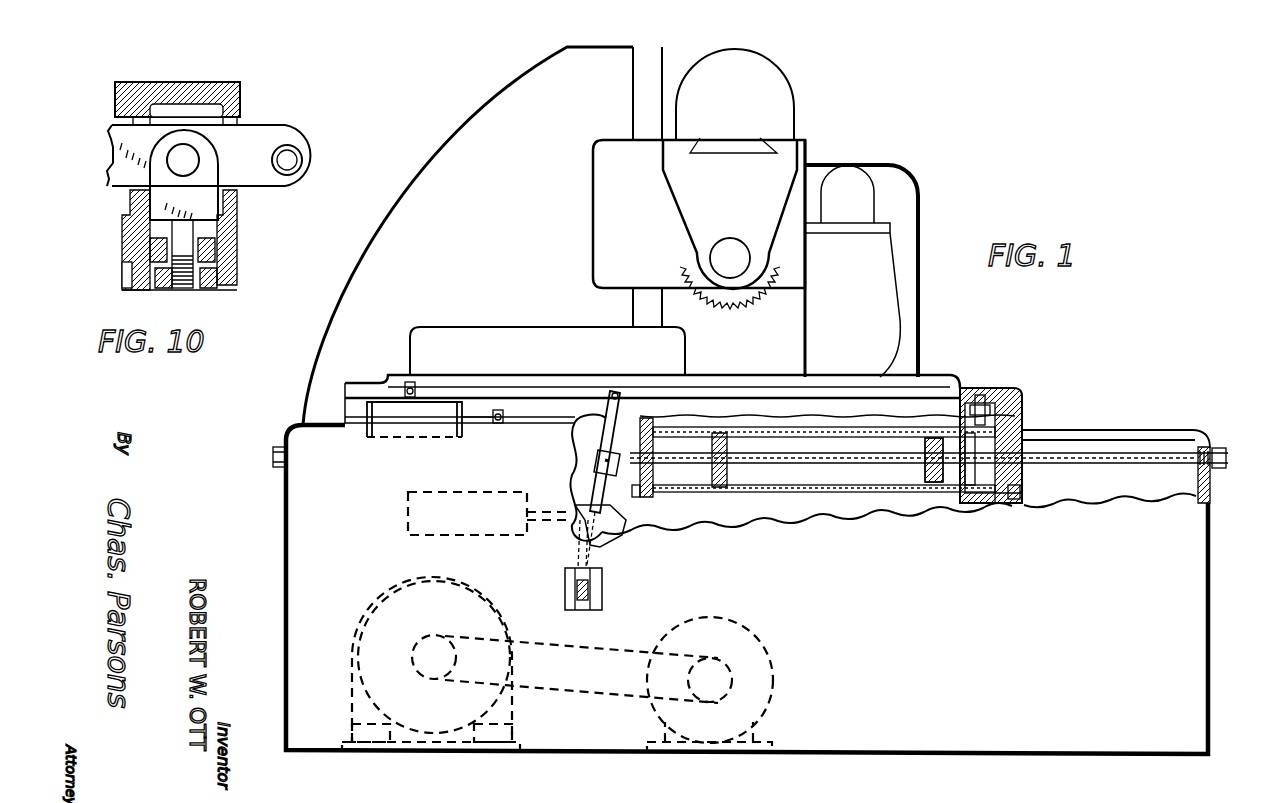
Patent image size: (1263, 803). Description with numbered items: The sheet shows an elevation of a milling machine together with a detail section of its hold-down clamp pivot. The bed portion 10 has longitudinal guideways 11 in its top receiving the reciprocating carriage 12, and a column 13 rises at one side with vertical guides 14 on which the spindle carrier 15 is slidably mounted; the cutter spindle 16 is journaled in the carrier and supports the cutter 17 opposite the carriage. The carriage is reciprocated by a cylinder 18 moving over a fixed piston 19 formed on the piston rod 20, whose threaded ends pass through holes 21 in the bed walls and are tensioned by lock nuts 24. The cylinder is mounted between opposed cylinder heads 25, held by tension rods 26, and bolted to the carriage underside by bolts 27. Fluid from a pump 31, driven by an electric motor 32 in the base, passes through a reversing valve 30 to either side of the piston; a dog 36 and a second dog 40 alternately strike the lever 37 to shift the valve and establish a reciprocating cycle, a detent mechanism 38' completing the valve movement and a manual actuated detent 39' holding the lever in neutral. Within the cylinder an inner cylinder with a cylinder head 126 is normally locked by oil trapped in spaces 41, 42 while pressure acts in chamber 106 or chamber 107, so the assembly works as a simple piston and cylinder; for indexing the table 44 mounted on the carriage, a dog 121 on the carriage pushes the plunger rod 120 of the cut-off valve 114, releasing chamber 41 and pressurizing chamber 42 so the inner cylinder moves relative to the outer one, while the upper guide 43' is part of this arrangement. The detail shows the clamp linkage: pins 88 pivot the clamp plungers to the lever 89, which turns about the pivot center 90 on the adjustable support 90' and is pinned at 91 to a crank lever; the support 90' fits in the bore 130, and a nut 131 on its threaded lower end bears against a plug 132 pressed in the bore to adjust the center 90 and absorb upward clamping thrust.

In FIG. 1, the bed portion 10 is at (1197, 676).
In FIG. 1, the longitudinal guideways 11 is at (1120, 426).
In FIG. 1, the reciprocating carriage 12 is at (928, 386).
In FIG. 1, the column 13 is at (440, 181).
In FIG. 1, the vertical guides 14 is at (650, 62).
In FIG. 1, the spindle carrier 15 is at (762, 174).
In FIG. 1, the cutter spindle 16 is at (731, 258).
In FIG. 1, the cutter 17 is at (745, 306).
In FIG. 1, the cylinder 18 is at (755, 492).
In FIG. 1, the fixed piston 19 is at (930, 484).
In FIG. 1, the piston rod 20 is at (1080, 465).
In FIG. 1, the holes 21 is at (1210, 492).
In FIG. 1, the lock nuts 24 is at (1214, 447).
In FIG. 1, the cylinder heads 25 is at (648, 498).
In FIG. 1, the tension rods 26 is at (1026, 504).
In FIG. 1, the bolts 27 is at (990, 394).
In FIG. 1, the reversing valve 30 is at (510, 528).
In FIG. 1, the pump 31 is at (758, 656).
In FIG. 1, the electric motor 32 is at (382, 618).
In FIG. 1, the dog 36 is at (607, 478).
In FIG. 1, the lever 37 is at (598, 420).
In FIG. 1, the detent mechanism 38' is at (570, 565).
In FIG. 1, the manual actuated detent 39' is at (583, 509).
In FIG. 1, the dog 40 is at (409, 382).
In FIG. 1, the space 41 is at (716, 488).
In FIG. 1, the space 42 is at (1013, 500).
In FIG. 1, the upper guide rail 43' is at (824, 442).
In FIG. 1, the table 44 is at (482, 326).
In FIG. 10, the pins 88 is at (289, 158).
In FIG. 10, the lever 89 is at (250, 132).
In FIG. 10, the pivot center 90 is at (238, 117).
In FIG. 10, the adjustable support 90' is at (223, 178).
In FIG. 1, the pin 91 is at (615, 458).
In FIG. 1, the chamber 106 is at (850, 492).
In FIG. 1, the chamber 107 is at (955, 488).
In FIG. 1, the cut-off valve 114 is at (367, 438).
In FIG. 1, the plunger rod 120 is at (490, 421).
In FIG. 1, the dog 121 is at (498, 424).
In FIG. 1, the cylinder head 126 is at (978, 492).
In FIG. 10, the bore 130 is at (210, 238).
In FIG. 10, the nut 131 is at (186, 290).
In FIG. 10, the plug 132 is at (236, 284).